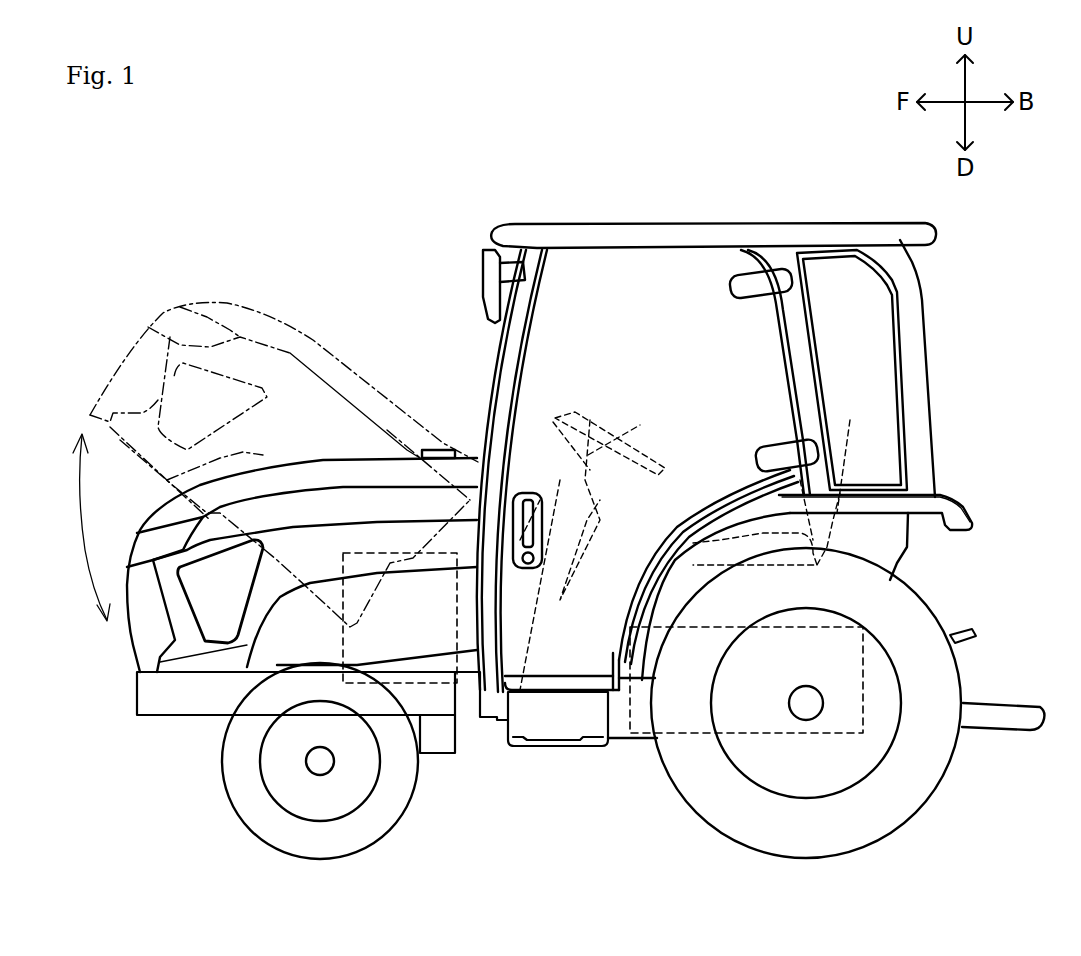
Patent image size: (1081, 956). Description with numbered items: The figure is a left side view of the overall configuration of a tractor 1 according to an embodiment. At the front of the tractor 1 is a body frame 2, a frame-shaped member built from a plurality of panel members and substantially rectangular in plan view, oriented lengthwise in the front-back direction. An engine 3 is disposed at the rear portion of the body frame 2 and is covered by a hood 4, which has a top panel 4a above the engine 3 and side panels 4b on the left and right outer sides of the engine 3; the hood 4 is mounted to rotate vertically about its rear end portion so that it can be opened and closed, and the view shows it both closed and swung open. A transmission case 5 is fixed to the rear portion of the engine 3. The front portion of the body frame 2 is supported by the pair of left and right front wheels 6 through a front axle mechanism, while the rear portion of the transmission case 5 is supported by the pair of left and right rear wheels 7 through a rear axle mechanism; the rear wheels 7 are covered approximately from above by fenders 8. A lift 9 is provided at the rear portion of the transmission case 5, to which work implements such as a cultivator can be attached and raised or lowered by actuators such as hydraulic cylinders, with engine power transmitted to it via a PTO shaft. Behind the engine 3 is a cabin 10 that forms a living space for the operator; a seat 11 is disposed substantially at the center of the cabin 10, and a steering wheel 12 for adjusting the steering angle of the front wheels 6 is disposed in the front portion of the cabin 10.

The tractor 1 is at (170, 182).
The body frame 2 is at (190, 708).
The engine 3 is at (418, 677).
The hood 4 is at (397, 383).
The top panel 4a is at (348, 475).
The side panels 4b is at (268, 580).
The transmission case 5 is at (687, 720).
The front wheels 6 is at (247, 805).
The rear wheels 7 is at (937, 762).
The fenders 8 is at (940, 505).
The lift 9 is at (978, 613).
The cabin 10 is at (748, 203).
The seat 11 is at (815, 520).
The steering wheel 12 is at (587, 417).